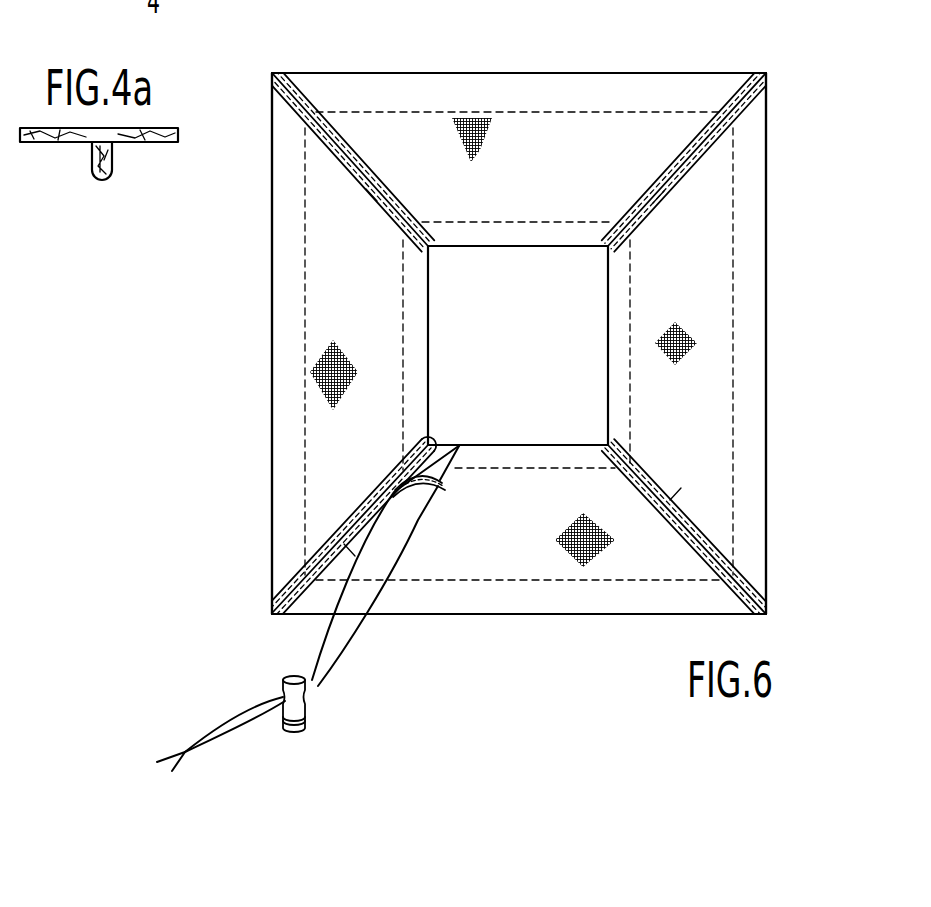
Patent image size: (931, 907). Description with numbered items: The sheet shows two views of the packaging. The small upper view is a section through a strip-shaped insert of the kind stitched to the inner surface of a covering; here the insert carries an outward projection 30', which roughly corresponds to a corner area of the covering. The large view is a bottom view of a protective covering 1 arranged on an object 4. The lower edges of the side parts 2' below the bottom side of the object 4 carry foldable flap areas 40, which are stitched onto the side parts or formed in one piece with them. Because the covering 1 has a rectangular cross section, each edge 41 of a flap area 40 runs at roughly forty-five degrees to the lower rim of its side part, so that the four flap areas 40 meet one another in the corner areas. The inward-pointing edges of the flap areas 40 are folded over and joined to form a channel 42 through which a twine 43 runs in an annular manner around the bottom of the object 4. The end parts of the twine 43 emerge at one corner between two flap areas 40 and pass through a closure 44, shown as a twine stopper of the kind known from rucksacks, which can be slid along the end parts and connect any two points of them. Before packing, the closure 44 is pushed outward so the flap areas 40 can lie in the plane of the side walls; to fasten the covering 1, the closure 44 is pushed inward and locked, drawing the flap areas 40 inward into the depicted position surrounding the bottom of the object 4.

In FIG. 6, the protective covering 1 is at (782, 336).
In FIG. 6, the side part 2' is at (519, 333).
In FIG. 6, the object 4 is at (536, 381).
In FIG. 4A, the outward projection 30' is at (77, 184).
In FIG. 6, the flap area 40 is at (320, 290).
In FIG. 6, the edge 41 is at (392, 200).
In FIG. 6, the channel 42 is at (442, 490).
In FIG. 6, the twine 43 is at (430, 542).
In FIG. 6, the closure 44 is at (300, 707).